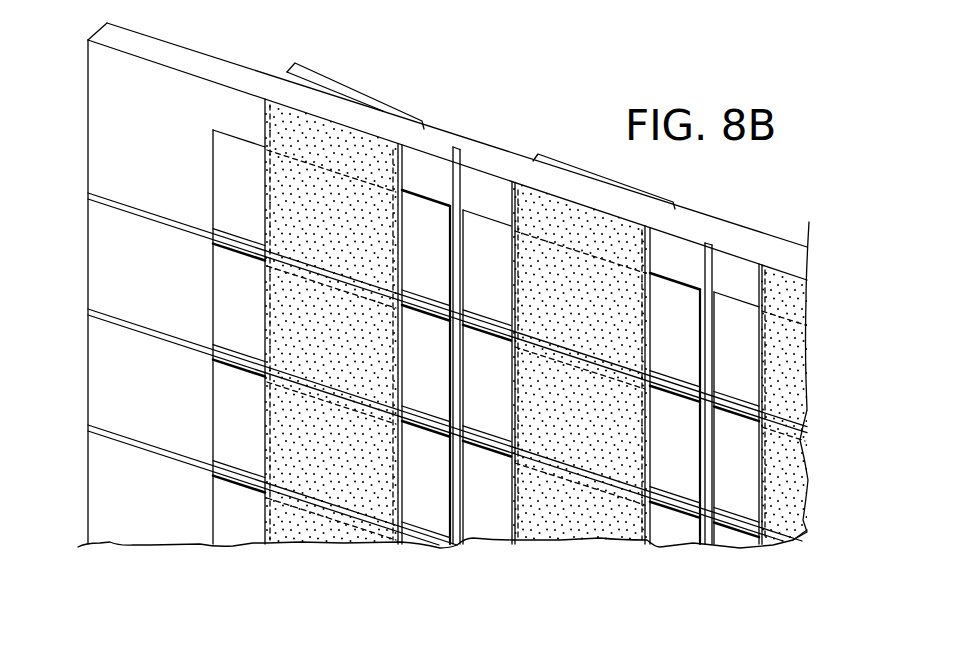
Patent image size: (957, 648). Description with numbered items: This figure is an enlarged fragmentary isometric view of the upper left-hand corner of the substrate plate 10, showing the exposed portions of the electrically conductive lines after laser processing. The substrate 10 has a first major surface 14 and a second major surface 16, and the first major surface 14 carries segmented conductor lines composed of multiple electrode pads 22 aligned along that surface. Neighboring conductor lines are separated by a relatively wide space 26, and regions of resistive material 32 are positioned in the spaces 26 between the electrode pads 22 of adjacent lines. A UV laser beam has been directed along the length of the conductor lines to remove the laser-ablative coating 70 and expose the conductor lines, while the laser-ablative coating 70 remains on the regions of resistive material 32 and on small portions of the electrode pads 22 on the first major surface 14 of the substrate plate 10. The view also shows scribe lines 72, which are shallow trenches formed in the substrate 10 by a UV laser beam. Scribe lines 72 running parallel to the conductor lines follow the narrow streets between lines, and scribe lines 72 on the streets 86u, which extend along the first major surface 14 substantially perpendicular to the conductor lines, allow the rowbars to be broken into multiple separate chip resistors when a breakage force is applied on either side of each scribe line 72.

The substrate 10 is at (100, 33).
The first major surface 14 is at (105, 60).
The second major surface 16 is at (138, 33).
The electrode pads 22 is at (253, 191).
The space 26 is at (434, 118).
The region of resistive material 32 is at (349, 548).
The laser-ablative coating 70 is at (798, 512).
The scribe line 72 is at (460, 155).
The street 86u is at (816, 432).